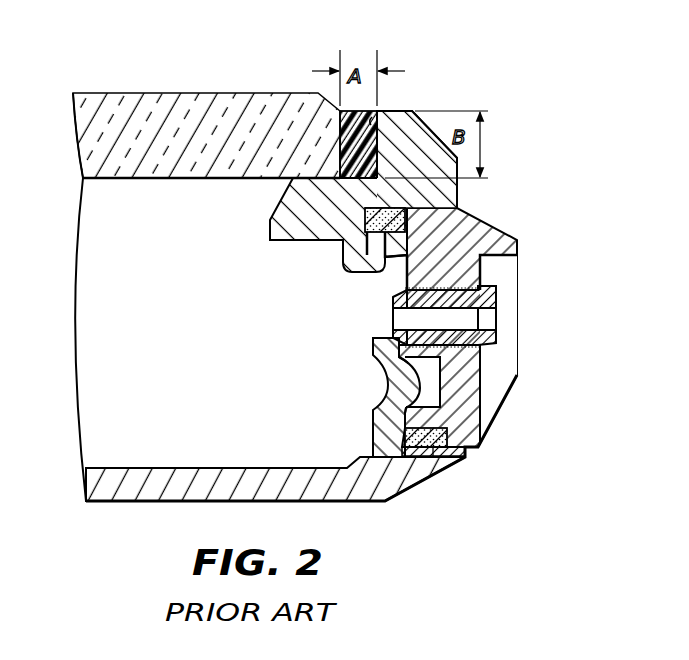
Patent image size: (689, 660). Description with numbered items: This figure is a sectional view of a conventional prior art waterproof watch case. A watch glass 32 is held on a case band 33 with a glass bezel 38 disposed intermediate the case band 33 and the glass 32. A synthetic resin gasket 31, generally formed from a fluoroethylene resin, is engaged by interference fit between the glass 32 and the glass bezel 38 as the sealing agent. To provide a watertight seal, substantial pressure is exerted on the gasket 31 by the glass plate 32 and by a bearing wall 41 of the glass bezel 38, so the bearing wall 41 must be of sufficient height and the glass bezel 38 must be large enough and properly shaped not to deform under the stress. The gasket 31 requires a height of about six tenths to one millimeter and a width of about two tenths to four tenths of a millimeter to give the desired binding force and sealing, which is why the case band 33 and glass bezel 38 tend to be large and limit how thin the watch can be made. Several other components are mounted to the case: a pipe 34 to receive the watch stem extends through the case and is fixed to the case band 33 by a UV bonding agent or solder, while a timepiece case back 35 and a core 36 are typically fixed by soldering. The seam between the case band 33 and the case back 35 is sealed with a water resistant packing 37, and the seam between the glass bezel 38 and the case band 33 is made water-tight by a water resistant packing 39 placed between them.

The synthetic resin gasket 31 is at (342, 118).
The watch glass 32 is at (158, 108).
The case band 33 is at (462, 243).
The pipe 34 is at (496, 345).
The timepiece case back 35 is at (421, 477).
The core 36 is at (404, 382).
The water resistant packing 37 is at (433, 452).
The glass bezel 38 is at (422, 111).
The water resistant packing 39 is at (367, 220).
The bearing wall 41 is at (372, 117).